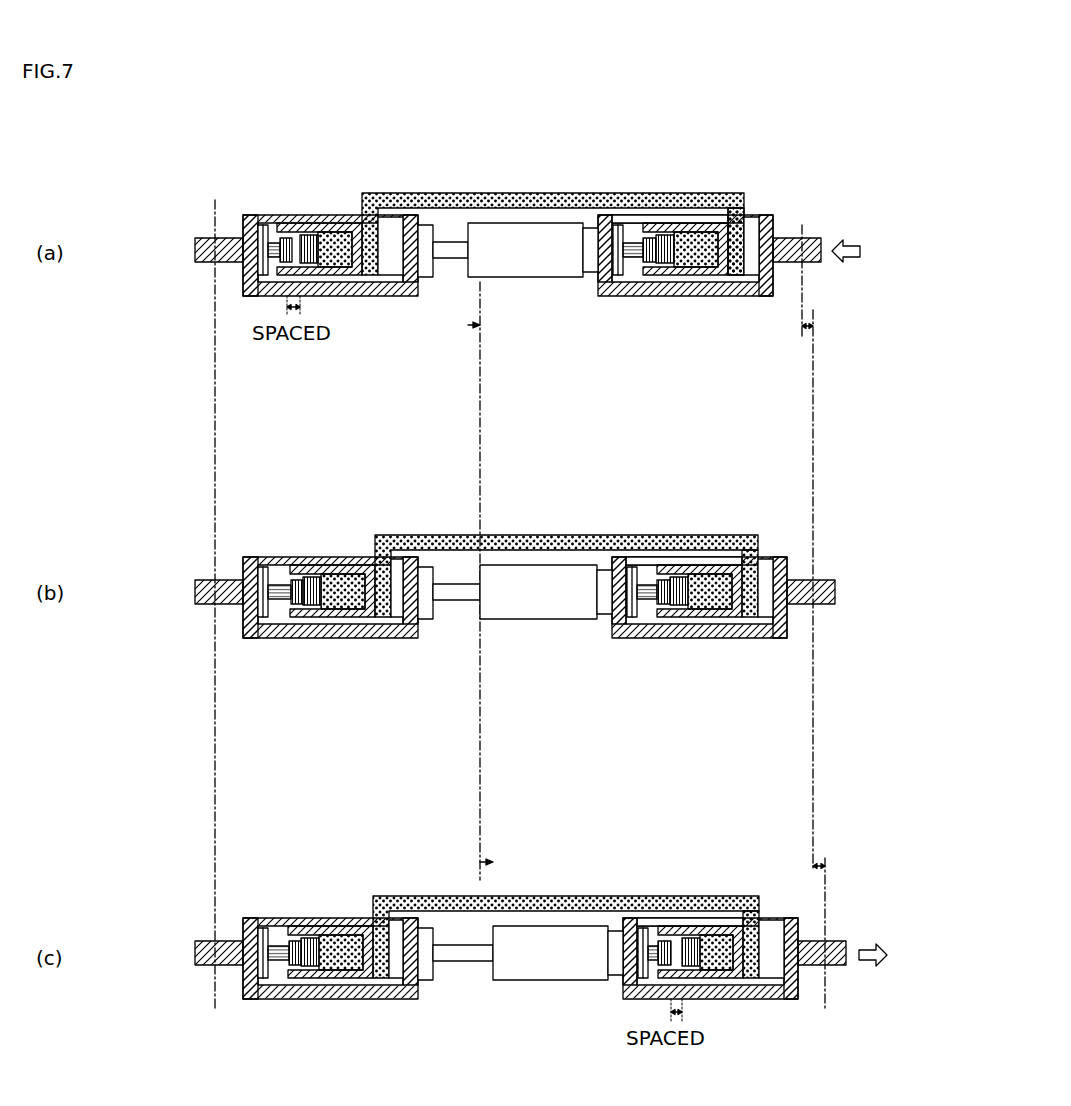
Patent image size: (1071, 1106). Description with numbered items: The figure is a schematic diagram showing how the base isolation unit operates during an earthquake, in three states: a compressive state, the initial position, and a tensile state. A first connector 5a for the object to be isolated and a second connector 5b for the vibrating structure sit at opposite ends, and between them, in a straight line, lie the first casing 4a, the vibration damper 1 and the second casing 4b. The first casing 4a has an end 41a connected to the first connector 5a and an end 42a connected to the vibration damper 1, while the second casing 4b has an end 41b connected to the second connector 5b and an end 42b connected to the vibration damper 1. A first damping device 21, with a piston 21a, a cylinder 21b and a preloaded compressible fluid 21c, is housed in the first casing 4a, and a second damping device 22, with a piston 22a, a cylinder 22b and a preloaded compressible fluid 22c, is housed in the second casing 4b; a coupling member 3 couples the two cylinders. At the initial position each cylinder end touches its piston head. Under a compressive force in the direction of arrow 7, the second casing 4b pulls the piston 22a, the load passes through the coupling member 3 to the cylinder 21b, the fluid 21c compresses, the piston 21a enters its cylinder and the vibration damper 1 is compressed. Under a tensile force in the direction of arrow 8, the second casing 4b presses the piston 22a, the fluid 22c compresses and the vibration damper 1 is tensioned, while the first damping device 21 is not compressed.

The vibration damper 1 is at (527, 255).
The coupling member 3 is at (520, 205).
The first casing 4a is at (370, 297).
The second casing 4b is at (690, 297).
The end of first casing 41a is at (246, 297).
The end of second casing 41b is at (755, 297).
The other end of first casing 42a is at (406, 297).
The other end of second casing 42b is at (592, 297).
The first connector 5a is at (211, 265).
The second connector 5b is at (797, 265).
The first damping device 21 is at (373, 147).
The piston 21a is at (262, 218).
The cylinder 21b is at (302, 225).
The compressible fluid 21c is at (337, 227).
The second damping device 22 is at (748, 147).
The piston 22a is at (620, 226).
The cylinder 22b is at (682, 225).
The compressible fluid 22c is at (708, 224).
The arrow 7 is at (857, 242).
The arrow 8 is at (868, 941).